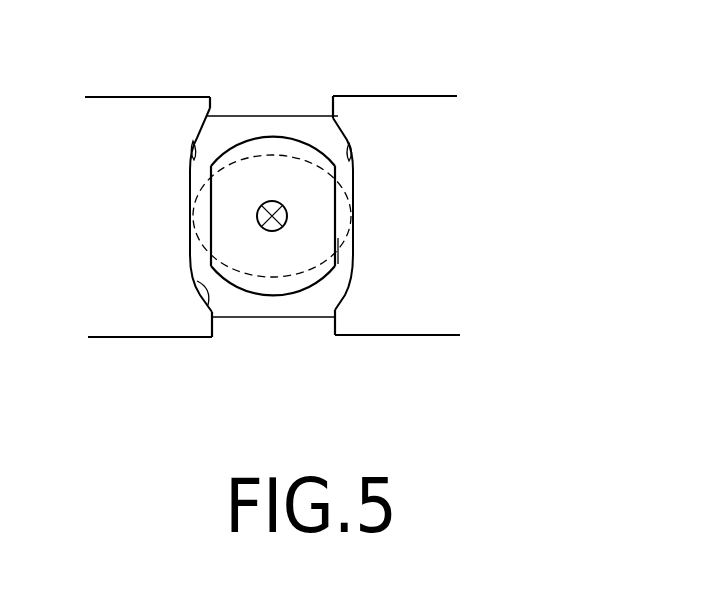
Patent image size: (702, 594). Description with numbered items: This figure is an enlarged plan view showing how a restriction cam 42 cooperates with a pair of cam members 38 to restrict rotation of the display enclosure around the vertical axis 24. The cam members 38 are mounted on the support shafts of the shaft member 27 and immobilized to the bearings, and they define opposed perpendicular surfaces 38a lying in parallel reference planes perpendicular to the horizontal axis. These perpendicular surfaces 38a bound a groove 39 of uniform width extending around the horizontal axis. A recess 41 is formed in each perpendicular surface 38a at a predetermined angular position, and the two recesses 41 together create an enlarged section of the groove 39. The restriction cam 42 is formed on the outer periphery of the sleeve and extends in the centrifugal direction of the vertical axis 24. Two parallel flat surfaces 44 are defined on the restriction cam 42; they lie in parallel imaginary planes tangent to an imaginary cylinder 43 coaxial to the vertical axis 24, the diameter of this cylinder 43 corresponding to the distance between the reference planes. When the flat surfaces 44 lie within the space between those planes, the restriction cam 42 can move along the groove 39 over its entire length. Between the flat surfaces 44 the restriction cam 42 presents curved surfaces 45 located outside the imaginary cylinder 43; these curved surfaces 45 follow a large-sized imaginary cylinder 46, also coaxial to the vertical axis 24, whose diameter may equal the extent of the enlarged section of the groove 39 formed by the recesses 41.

The vertical axis 24 is at (258, 213).
The shaft member 27 is at (311, 318).
The cam member 38 is at (105, 337).
The perpendicular surface 38a is at (333, 96).
The groove 39 is at (198, 287).
The recess 41 is at (194, 152).
The restriction cam 42 is at (229, 143).
The imaginary cylinder 43 is at (310, 264).
The parallel flat surfaces 44 is at (210, 183).
The curved surfaces 45 is at (270, 135).
The large-sized imaginary cylinder 46 is at (353, 180).